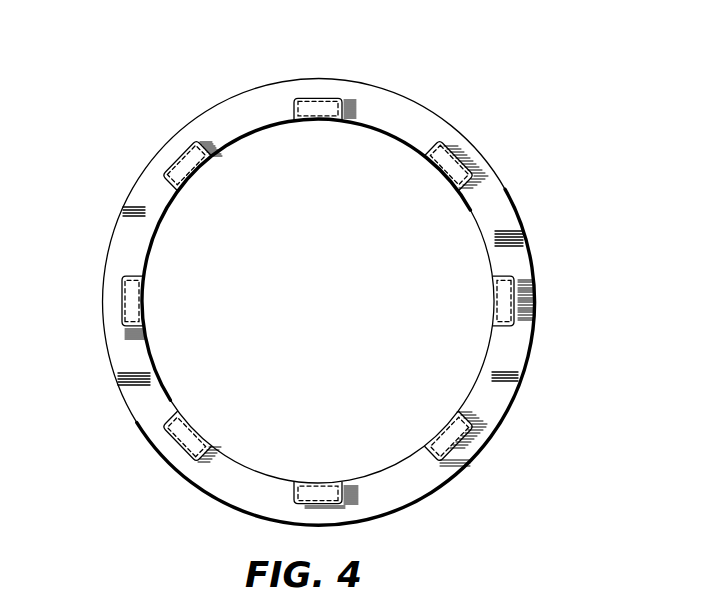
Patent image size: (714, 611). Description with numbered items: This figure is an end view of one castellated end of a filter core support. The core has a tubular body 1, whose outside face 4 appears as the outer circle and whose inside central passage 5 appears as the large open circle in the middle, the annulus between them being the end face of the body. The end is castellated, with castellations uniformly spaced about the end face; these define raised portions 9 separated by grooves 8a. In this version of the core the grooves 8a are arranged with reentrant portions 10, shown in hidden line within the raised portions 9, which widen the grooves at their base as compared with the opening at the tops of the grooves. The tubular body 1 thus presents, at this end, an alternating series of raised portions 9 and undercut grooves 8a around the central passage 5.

The tubular body 1 is at (523, 386).
The outside face 4 is at (536, 252).
The inside central passage 5 is at (364, 316).
The grooves 8a is at (243, 120).
The raised portions 9 is at (323, 98).
The reentrant portions 10 is at (300, 97).